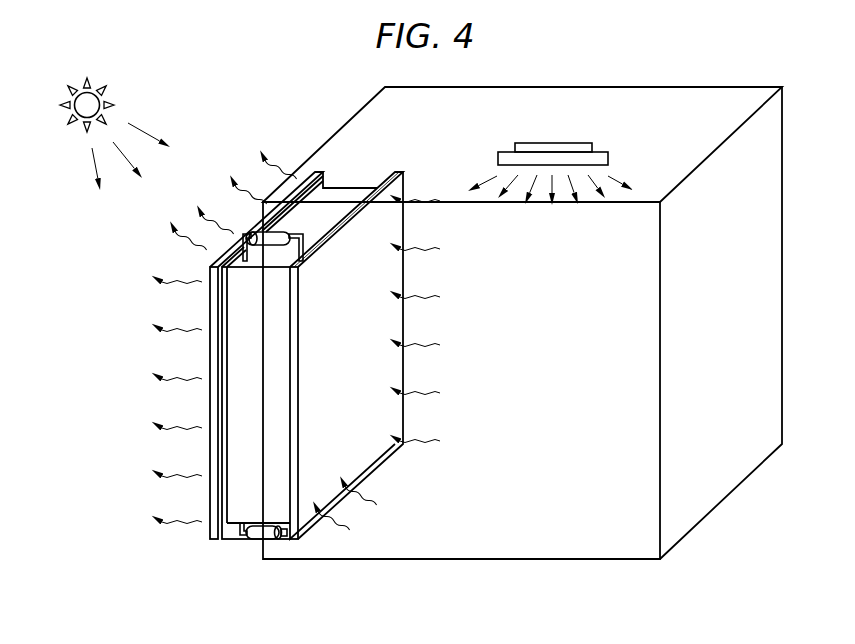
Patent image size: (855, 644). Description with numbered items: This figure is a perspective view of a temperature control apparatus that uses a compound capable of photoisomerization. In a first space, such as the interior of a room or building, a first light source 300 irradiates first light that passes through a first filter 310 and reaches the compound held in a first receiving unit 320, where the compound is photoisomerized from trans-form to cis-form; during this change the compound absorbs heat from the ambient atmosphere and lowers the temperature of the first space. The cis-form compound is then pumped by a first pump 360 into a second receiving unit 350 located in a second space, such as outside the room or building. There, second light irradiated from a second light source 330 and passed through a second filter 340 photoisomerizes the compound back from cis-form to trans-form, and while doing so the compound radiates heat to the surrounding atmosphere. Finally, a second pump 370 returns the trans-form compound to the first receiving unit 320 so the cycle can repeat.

The first light source 300 is at (605, 160).
The first filter 310 is at (320, 521).
The first receiving unit 320 is at (283, 495).
The second light source 330 is at (94, 104).
The second filter 340 is at (214, 532).
The second receiving unit 350 is at (246, 497).
The first pump 360 is at (252, 233).
The second pump 370 is at (259, 532).